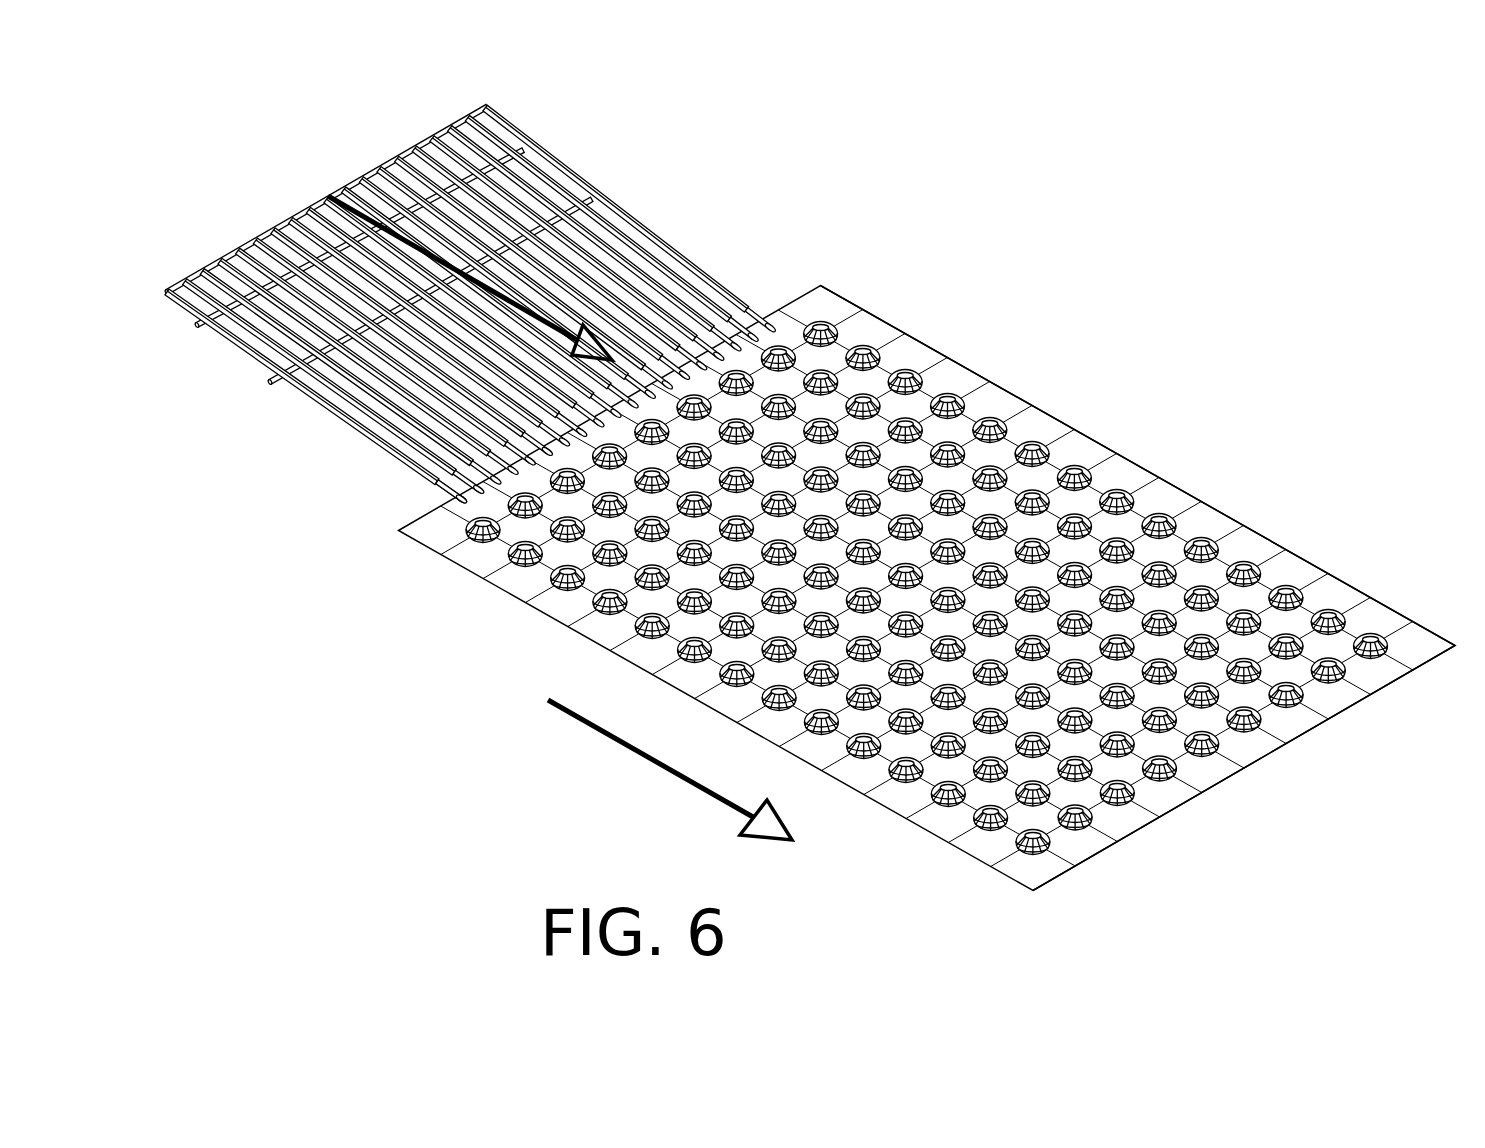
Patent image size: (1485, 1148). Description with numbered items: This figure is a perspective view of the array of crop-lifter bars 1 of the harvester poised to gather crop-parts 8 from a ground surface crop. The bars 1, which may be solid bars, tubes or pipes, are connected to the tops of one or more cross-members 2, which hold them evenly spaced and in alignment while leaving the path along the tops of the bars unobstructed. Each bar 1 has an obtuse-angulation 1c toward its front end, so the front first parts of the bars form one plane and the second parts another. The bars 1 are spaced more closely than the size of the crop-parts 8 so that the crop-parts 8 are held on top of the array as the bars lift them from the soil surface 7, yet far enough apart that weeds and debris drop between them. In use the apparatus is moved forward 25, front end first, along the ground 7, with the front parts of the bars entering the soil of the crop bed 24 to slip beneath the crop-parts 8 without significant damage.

The crop-lifter bar 1 is at (680, 267).
The obtuse-angulation 1c is at (445, 486).
The cross-member 2 is at (490, 108).
The soil surface 7 is at (841, 296).
The crop-part 8 is at (923, 377).
The crop bed 24 is at (1080, 448).
The forward direction 25 is at (330, 196).